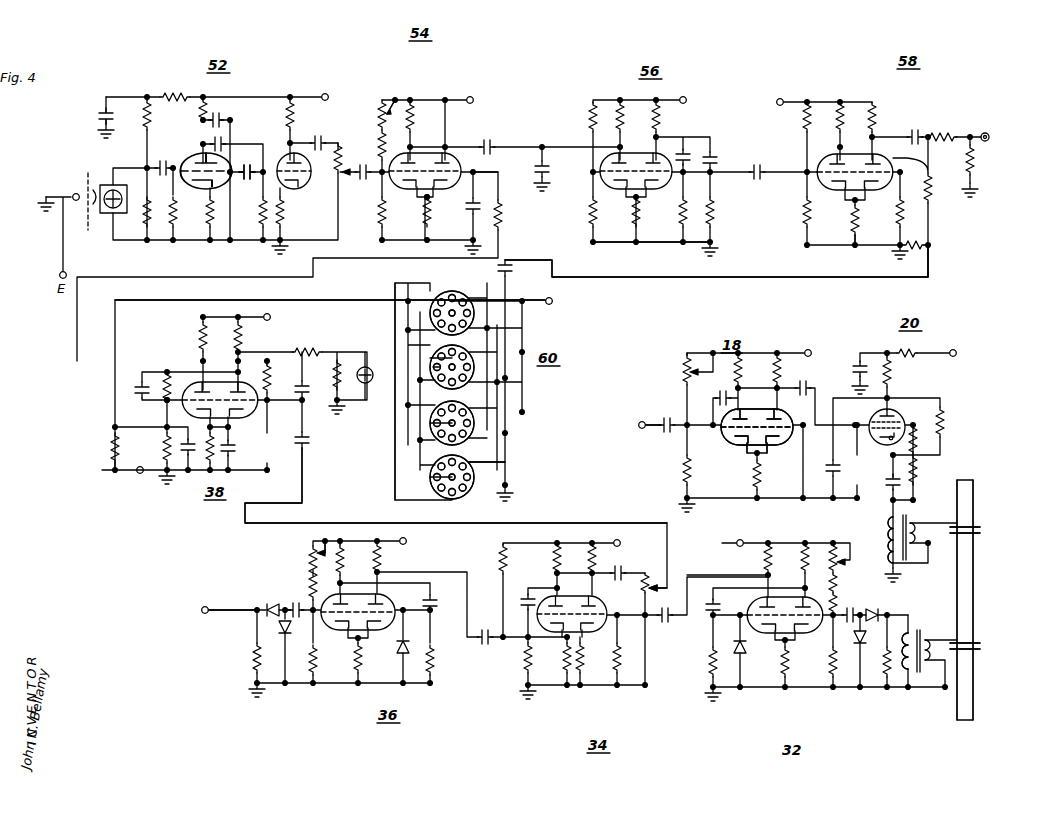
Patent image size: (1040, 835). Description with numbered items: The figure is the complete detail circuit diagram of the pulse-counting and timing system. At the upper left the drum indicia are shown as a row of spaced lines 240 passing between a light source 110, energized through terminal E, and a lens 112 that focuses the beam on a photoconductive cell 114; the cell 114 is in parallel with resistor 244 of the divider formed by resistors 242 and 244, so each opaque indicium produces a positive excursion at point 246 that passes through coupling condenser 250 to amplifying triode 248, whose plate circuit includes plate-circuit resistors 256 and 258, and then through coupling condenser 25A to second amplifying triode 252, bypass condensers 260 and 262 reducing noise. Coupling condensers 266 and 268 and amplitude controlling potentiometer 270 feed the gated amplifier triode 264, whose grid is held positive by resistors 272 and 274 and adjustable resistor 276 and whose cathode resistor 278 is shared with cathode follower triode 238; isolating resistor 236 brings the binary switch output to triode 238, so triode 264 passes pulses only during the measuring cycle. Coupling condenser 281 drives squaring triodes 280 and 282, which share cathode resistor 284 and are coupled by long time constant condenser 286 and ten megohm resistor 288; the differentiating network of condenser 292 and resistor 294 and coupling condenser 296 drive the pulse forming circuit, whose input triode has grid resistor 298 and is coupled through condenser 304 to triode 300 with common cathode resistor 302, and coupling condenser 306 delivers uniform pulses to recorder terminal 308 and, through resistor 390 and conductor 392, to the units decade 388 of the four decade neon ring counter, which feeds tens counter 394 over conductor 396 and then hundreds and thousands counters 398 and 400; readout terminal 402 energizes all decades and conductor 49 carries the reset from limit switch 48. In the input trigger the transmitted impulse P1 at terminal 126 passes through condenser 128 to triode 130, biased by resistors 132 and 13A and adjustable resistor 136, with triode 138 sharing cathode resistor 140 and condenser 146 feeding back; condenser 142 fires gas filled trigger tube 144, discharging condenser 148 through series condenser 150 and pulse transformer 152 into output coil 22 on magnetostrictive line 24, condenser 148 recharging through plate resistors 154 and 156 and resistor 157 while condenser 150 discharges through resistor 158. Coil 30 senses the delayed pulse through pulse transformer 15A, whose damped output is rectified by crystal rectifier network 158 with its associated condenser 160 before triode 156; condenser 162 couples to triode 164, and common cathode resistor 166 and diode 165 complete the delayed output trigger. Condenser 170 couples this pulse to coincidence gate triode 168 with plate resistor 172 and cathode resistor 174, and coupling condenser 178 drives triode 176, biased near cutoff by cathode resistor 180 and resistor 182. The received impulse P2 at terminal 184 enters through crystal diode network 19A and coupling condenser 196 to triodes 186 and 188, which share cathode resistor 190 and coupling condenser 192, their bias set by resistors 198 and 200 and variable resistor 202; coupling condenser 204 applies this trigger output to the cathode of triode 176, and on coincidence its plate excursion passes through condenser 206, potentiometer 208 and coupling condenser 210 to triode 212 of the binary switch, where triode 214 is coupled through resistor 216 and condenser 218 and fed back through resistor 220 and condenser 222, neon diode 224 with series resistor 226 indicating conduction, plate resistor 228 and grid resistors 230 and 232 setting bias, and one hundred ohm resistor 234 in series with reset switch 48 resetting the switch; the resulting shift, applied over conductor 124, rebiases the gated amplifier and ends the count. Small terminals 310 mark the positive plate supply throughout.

The light source 110 is at (70, 194).
The lens 112 is at (104, 126).
The photoconductive cell 114 is at (103, 214).
The spaced lines 240 is at (95, 175).
The resistor 242 is at (164, 118).
The resistor 244 is at (146, 225).
The point 246 is at (158, 166).
The amplifying triode 248 is at (202, 200).
The coupling condenser 250 is at (171, 228).
The second amplifying triode 252 is at (297, 188).
The coupling condenser 25A is at (224, 141).
The resistor 256 is at (288, 110).
The resistor 258 is at (205, 108).
The bypass condenser 260 is at (222, 113).
The bypass condenser 262 is at (244, 183).
The coupling condenser 266 is at (318, 139).
The coupling condenser 268 is at (362, 180).
The amplitude controlling potentiometer 270 is at (298, 216).
The resistor 272 is at (378, 222).
The resistor 274 is at (378, 108).
The adjustable resistor 276 is at (390, 108).
The cathode resistor 278 is at (432, 224).
The coupling condenser 281 is at (489, 142).
The isolating resistor 236 is at (502, 212).
The triode 238 is at (440, 212).
The triode 264 is at (410, 195).
The triode 280 is at (605, 214).
The triode 282 is at (648, 212).
The common cathode resistor 284 is at (681, 222).
The condenser 286 is at (686, 150).
The resistor 288 is at (651, 255).
The condenser 292 is at (712, 152).
The resistor 294 is at (718, 222).
The coupling condenser 296 is at (756, 166).
The resistor 298 is at (804, 235).
The triode 300 is at (870, 192).
The common cathode resistor 302 is at (855, 240).
The coupling condenser 304 is at (932, 187).
The coupling condenser 306 is at (914, 130).
The terminal 308 is at (990, 141).
The resistor 390 is at (938, 232).
The conductor 392 is at (580, 278).
The conductor 49 is at (380, 298).
The units decade 388 is at (438, 308).
The tens counter 394 is at (435, 377).
The conductor 396 is at (488, 340).
The hundreds counter 398 is at (500, 432).
The thousands counter 400 is at (458, 490).
The terminal 402 is at (570, 304).
The neon diode 224 is at (368, 365).
The condenser 218 is at (143, 380).
The resistor 216 is at (165, 375).
The series resistor 226 is at (307, 348).
The plate resistor 228 is at (252, 337).
The resistor 220 is at (280, 378).
The grid resistor 230 is at (163, 412).
The grid resistor 232 is at (163, 447).
The resistor 234 is at (112, 443).
The condenser 222 is at (300, 393).
The triode 212 is at (243, 418).
The triode 214 is at (203, 445).
The coupling condenser 210 is at (305, 443).
The reset switch 48 is at (112, 475).
The adjustable resistor 136 is at (683, 372).
The resistor 13A is at (670, 395).
The condenser 146 is at (707, 380).
The condenser 142 is at (803, 383).
The transmitted impulse P1 is at (636, 415).
The input terminal 126 is at (638, 428).
The condenser 128 is at (666, 432).
The triode 130 is at (742, 440).
The second triode 138 is at (770, 440).
The cathode resistor 140 is at (771, 475).
The resistor 132 is at (680, 483).
The condenser 148 is at (830, 478).
The plate resistor 156 is at (920, 350).
The plate resistor 154 is at (895, 385).
The gas filled trigger tube 144 is at (905, 415).
The resistor 157 is at (945, 432).
The resistor 158 is at (898, 475).
The series condenser 150 is at (918, 475).
The pulse transformer 152 is at (905, 525).
The output coil 22 is at (975, 535).
The magnetostrictive line 24 is at (967, 575).
The coil 30 is at (975, 655).
The pulse transformer 15A is at (905, 651).
The conductor 124 is at (323, 522).
The variable resistor 202 is at (312, 550).
The resistor 200 is at (308, 575).
The crystal diode network 19A is at (290, 590).
The terminal 184 is at (201, 610).
The received impulse P2 is at (226, 622).
The coupling condenser 196 is at (297, 617).
The triode 186 is at (345, 628).
The triode 188 is at (385, 641).
The common cathode resistor 190 is at (364, 660).
The coupling condenser 192 is at (436, 605).
The resistor 198 is at (310, 665).
The resistor 182 is at (502, 558).
The plate resistor 172 is at (596, 556).
The coupling condenser 178 is at (525, 598).
The potentiometer 208 is at (622, 578).
The condenser 206 is at (644, 588).
The coupling condenser 204 is at (486, 645).
The triode 176 is at (556, 632).
The triode 168 is at (590, 628).
The cathode resistor 180 is at (567, 678).
The cathode resistor 174 is at (595, 680).
The condenser 170 is at (664, 623).
The condenser 162 is at (708, 603).
The capacitor 160 is at (848, 608).
The triode 164 is at (755, 650).
The common cathode resistor 166 is at (775, 680).
The diode 165 is at (738, 690).
The small terminal 310 is at (326, 95).
The terminal E is at (63, 275).